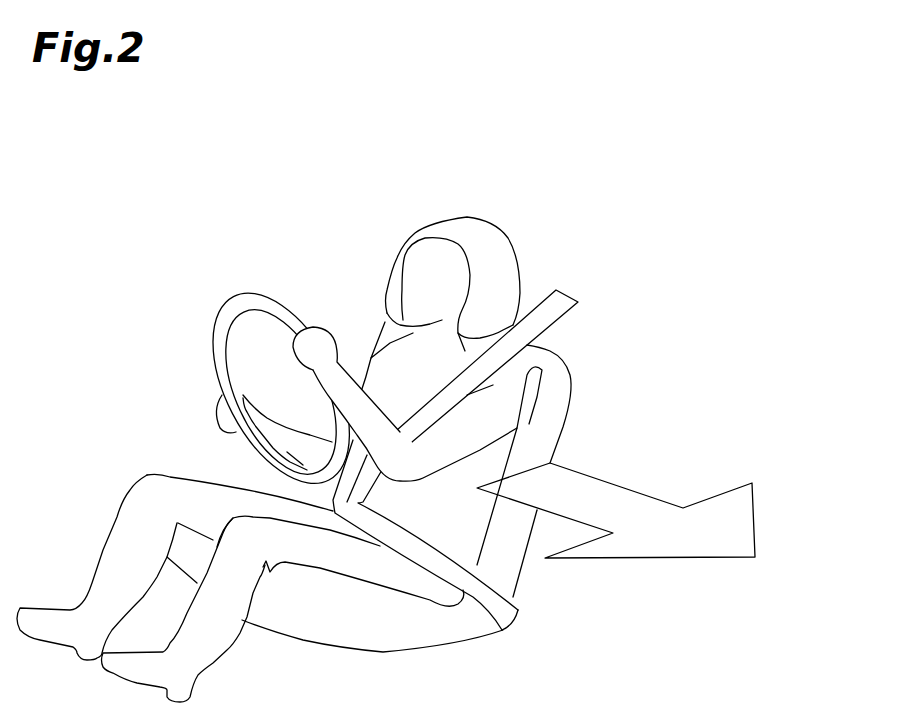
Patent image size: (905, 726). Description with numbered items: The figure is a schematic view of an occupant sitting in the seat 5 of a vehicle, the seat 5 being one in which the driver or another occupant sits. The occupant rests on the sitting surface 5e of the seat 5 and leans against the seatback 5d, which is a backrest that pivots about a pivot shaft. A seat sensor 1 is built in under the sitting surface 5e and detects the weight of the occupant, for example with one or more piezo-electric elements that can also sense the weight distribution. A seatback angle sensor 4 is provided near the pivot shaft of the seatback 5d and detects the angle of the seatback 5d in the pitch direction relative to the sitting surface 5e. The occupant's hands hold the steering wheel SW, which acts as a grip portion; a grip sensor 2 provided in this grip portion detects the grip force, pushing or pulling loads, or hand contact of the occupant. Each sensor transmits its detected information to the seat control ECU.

The steering wheel SW is at (240, 298).
The grip sensor 2 is at (213, 391).
The seat 5 is at (585, 381).
The seatback 5d is at (505, 557).
The sitting surface 5e is at (353, 598).
The seat sensor 1 is at (317, 613).
The seatback angle sensor 4 is at (475, 622).